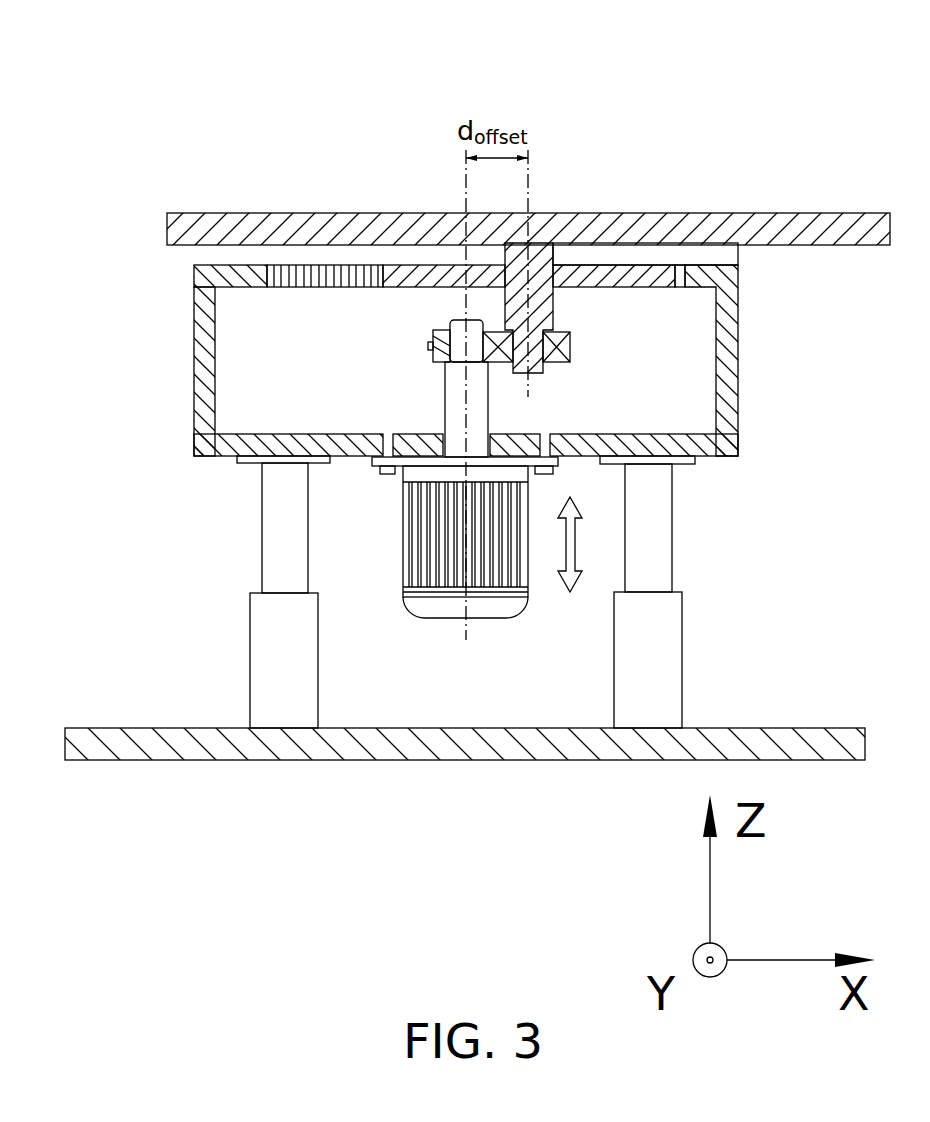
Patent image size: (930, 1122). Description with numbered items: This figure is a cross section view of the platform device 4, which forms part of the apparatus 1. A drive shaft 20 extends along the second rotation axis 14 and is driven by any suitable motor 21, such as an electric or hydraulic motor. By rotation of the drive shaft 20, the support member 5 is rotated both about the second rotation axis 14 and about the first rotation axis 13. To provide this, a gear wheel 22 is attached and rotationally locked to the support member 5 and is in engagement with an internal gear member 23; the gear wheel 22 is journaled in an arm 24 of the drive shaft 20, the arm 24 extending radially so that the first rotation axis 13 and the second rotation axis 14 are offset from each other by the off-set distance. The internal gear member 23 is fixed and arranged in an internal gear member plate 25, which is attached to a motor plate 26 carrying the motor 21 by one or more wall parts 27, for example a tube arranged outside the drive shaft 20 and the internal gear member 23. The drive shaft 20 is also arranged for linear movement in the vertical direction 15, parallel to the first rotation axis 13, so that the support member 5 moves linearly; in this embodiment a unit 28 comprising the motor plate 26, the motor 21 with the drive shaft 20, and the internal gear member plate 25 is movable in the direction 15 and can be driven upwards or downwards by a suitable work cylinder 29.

The apparatus 1 is at (756, 73).
The platform device 4 is at (122, 225).
The support member 5 is at (403, 213).
The first rotation axis 13 is at (530, 388).
The second rotation axis 14 is at (467, 412).
The direction 15 is at (575, 545).
The drive shaft 20 is at (452, 383).
The motor 21 is at (442, 618).
The gear wheel 22 is at (637, 277).
The internal gear member 23 is at (312, 277).
The arm 24 is at (572, 343).
The internal gear member plate 25 is at (233, 277).
The motor plate 26 is at (349, 456).
The wall part 27 is at (194, 302).
The unit 28 is at (713, 477).
The work cylinder 29 is at (682, 660).